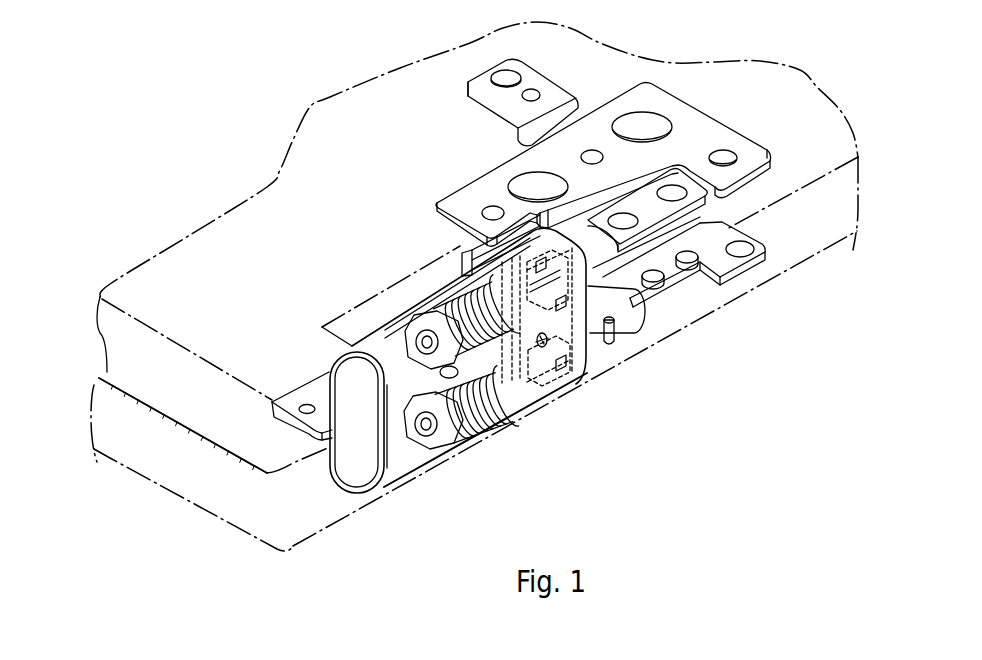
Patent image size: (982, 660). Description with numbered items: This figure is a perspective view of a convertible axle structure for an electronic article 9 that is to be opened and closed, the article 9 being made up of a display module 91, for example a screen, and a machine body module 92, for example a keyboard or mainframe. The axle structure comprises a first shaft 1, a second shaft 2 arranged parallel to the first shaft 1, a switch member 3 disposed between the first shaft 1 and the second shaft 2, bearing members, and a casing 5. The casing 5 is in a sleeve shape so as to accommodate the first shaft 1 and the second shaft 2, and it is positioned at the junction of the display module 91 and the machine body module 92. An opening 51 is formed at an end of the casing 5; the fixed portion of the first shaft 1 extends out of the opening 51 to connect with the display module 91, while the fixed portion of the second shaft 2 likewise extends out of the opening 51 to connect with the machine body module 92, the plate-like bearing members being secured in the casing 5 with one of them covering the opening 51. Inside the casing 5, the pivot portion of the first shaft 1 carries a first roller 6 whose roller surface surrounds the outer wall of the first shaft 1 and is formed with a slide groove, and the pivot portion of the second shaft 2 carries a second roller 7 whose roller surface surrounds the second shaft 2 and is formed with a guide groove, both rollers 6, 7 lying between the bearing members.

The first shaft 1 is at (405, 340).
The second shaft 2 is at (423, 448).
The switch member 3 is at (587, 381).
The casing 5 is at (350, 490).
The opening 51 is at (612, 355).
The first roller 6 is at (462, 258).
The second roller 7 is at (553, 397).
The electronic article 9 is at (441, 286).
The display module 91 is at (118, 338).
The machine body module 92 is at (110, 428).